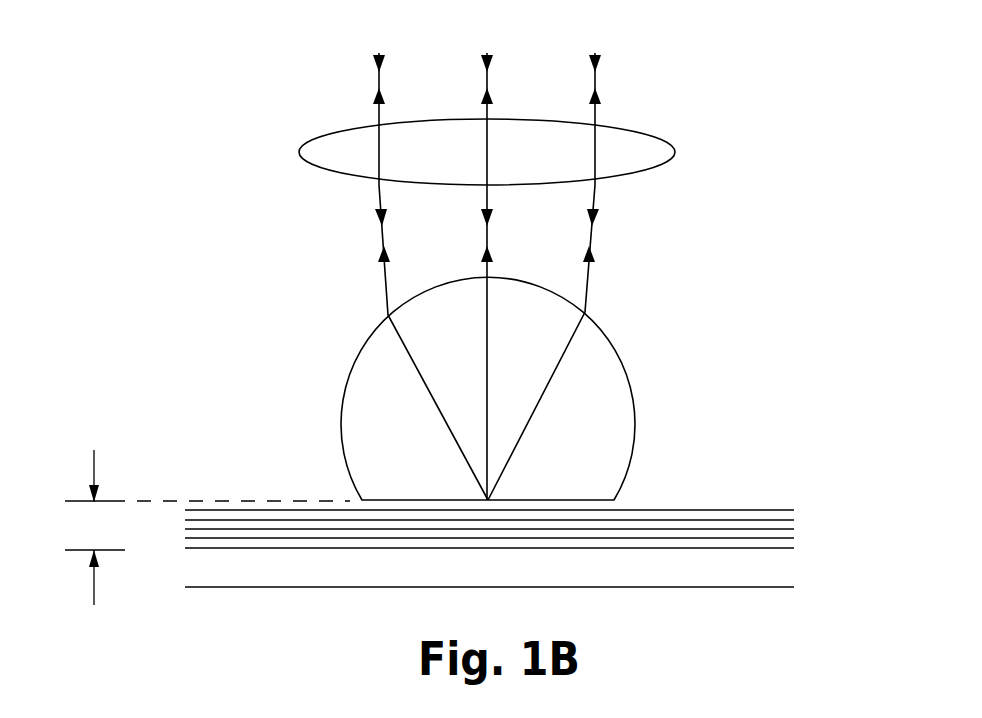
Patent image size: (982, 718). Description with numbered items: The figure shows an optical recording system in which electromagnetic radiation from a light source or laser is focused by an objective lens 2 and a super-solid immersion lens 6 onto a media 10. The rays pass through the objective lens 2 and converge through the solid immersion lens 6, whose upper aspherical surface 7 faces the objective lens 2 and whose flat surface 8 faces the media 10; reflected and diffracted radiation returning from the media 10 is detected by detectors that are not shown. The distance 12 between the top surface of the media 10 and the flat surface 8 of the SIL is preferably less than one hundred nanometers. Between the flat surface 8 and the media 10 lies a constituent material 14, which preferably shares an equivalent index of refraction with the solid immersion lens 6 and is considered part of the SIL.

The objective lens 2 is at (627, 150).
The solid immersion lens 6 is at (582, 402).
The aspherical surface 7 is at (590, 322).
The flat surface 8 is at (573, 498).
The media 10 is at (753, 577).
The distance 12 is at (207, 527).
The constituent material 14 is at (787, 528).